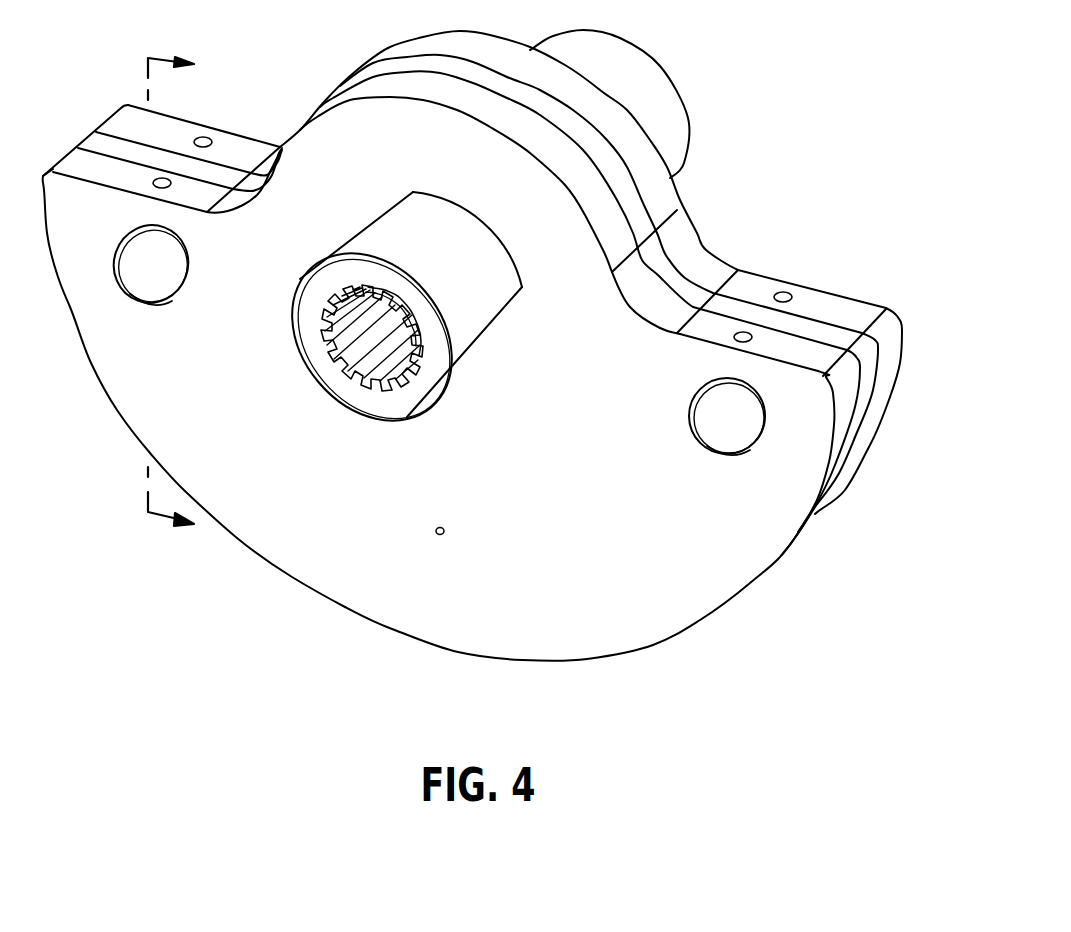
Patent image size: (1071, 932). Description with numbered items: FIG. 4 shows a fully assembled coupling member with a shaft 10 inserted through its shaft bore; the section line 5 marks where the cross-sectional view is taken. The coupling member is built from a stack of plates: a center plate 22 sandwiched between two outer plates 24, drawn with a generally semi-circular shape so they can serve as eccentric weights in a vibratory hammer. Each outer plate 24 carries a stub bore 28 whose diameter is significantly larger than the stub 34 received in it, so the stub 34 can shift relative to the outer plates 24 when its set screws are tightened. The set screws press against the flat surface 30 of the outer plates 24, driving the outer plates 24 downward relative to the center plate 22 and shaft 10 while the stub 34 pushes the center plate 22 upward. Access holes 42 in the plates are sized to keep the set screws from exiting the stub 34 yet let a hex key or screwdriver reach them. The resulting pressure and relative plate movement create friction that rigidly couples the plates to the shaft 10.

The section line 5- 5 is at (171, 294).
The shaft 10 is at (650, 73).
The center plate 22 is at (865, 395).
The outer plates 24 is at (845, 308).
The stub bores 28 is at (178, 245).
The flat surface 30 is at (148, 308).
The stub 34 is at (163, 275).
The access holes 42 is at (206, 136).